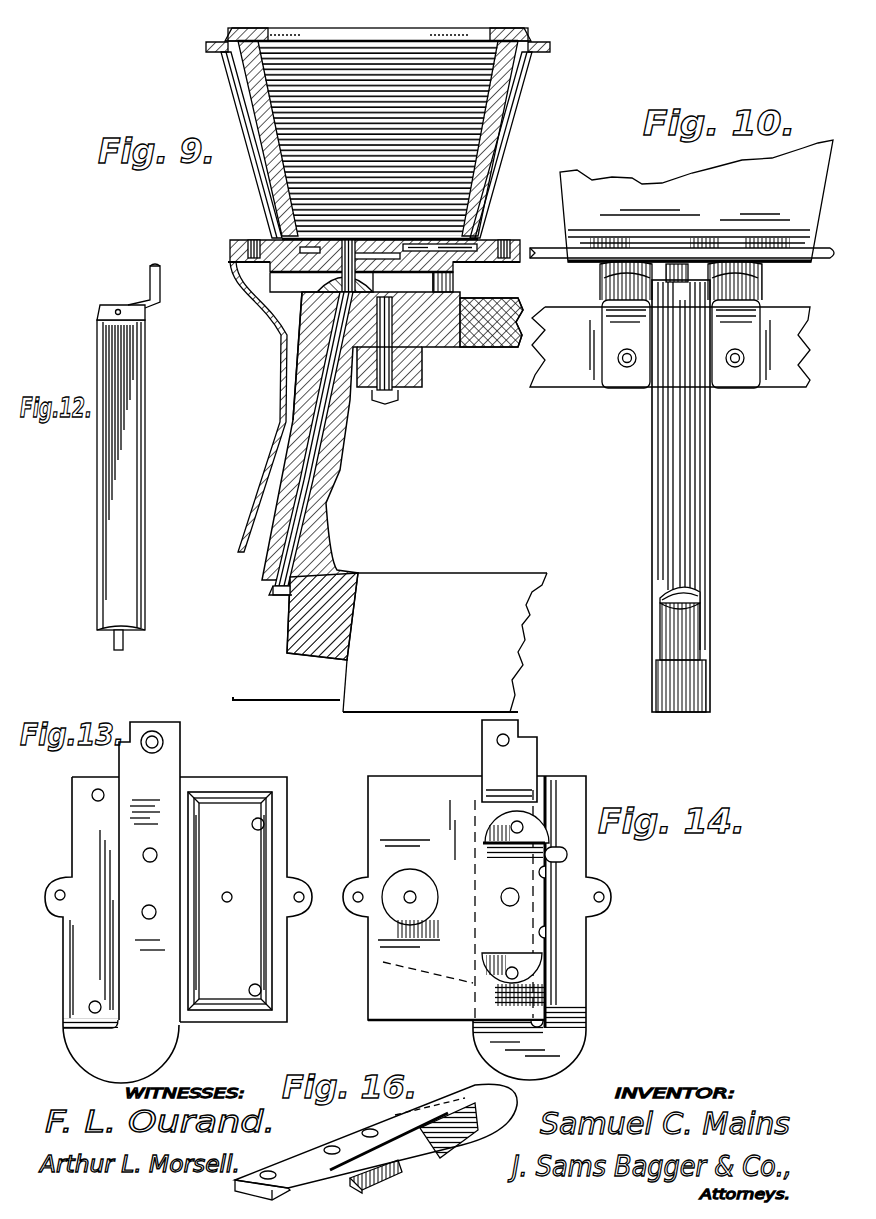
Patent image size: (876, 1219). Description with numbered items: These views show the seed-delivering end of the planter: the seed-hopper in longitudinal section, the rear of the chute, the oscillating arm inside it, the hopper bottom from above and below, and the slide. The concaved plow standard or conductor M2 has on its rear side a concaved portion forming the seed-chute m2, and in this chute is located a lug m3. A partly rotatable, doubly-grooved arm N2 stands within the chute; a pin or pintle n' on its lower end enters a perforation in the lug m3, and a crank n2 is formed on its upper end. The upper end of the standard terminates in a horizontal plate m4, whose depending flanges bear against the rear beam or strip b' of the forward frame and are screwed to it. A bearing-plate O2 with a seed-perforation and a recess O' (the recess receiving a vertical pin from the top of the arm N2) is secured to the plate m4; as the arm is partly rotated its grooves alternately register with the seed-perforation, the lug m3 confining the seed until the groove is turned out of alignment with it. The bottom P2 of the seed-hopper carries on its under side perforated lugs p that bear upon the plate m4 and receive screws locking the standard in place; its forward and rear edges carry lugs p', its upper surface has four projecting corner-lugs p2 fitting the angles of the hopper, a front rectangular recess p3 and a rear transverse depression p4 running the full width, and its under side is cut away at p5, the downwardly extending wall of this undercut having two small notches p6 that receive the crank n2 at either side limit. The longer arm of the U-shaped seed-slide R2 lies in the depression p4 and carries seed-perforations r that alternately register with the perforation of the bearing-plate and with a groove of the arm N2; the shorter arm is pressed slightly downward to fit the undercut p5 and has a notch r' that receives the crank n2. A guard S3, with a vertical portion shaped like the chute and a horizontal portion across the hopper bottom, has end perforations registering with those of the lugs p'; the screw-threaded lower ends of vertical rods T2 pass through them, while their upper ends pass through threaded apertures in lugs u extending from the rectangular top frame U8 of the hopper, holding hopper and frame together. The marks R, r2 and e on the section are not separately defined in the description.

In FIG. 9, the lugs u is at (206, 47).
In FIG. 9, the vertical rods T2 is at (224, 88).
In FIG. 9, the rectangular top frame U8 is at (530, 22).
In FIG. 9, the bearing-plate O2 is at (470, 100).
In FIG. 9, the bottom of the seed-hopper P2 is at (236, 240).
In FIG. 10, the bottom of the seed-hopper P2 is at (582, 262).
In FIG. 13, the bottom of the seed-hopper P2 is at (195, 830).
In FIG. 14, the bottom of the seed-hopper P2 is at (428, 790).
In FIG. 9, the lugs p' is at (358, 243).
In FIG. 13, the lugs p' is at (171, 891).
In FIG. 9, the ring R is at (300, 260).
In FIG. 9, the channel r2 is at (430, 244).
In FIG. 9, the rear transverse depression p4 is at (375, 253).
In FIG. 13, the rear transverse depression p4 is at (182, 1024).
In FIG. 9, the guard S3 is at (345, 240).
In FIG. 9, the undercut portion p5 is at (270, 268).
In FIG. 14, the undercut portion p5 is at (566, 776).
In FIG. 9, the recess O' is at (304, 283).
In FIG. 9, the gap e is at (362, 283).
In FIG. 9, the perforated lugs p is at (460, 282).
In FIG. 10, the perforated lugs p is at (670, 324).
In FIG. 13, the perforated lugs p is at (287, 904).
In FIG. 14, the perforated lugs p is at (503, 885).
In FIG. 9, the horizontal plate m4 is at (462, 299).
In FIG. 9, the rear beam or strip b' is at (408, 363).
In FIG. 9, the concaved plow standard M2 is at (338, 482).
In FIG. 10, the concaved plow standard M2 is at (711, 504).
In FIG. 9, the seed-chute m2 is at (296, 479).
In FIG. 9, the lug m3 is at (356, 580).
In FIG. 10, the lug m3 is at (705, 595).
In FIG. 9, the pin or pintle n' is at (247, 601).
In FIG. 12, the pin or pintle n' is at (133, 644).
In FIG. 10, the crank n2 is at (662, 266).
In FIG. 12, the crank n2 is at (161, 283).
In FIG. 10, the partly-rotatable doubly-grooved arm N2 is at (666, 492).
In FIG. 12, the partly-rotatable doubly-grooved arm N2 is at (135, 475).
In FIG. 13, the U-shaped seed-slide R2 is at (135, 722).
In FIG. 14, the U-shaped seed-slide R2 is at (515, 730).
In FIG. 16, the U-shaped seed-slide R2 is at (376, 1142).
In FIG. 13, the corner-lugs p2 is at (98, 789).
In FIG. 13, the front rectangular depression p3 is at (240, 862).
In FIG. 13, the seed-perforations r is at (148, 876).
In FIG. 14, the seed-perforations r is at (510, 897).
In FIG. 16, the seed-perforations r is at (319, 1139).
In FIG. 14, the notches p6 is at (540, 872).
In FIG. 14, the notch r' is at (550, 856).
In FIG. 16, the notch r' is at (405, 1179).